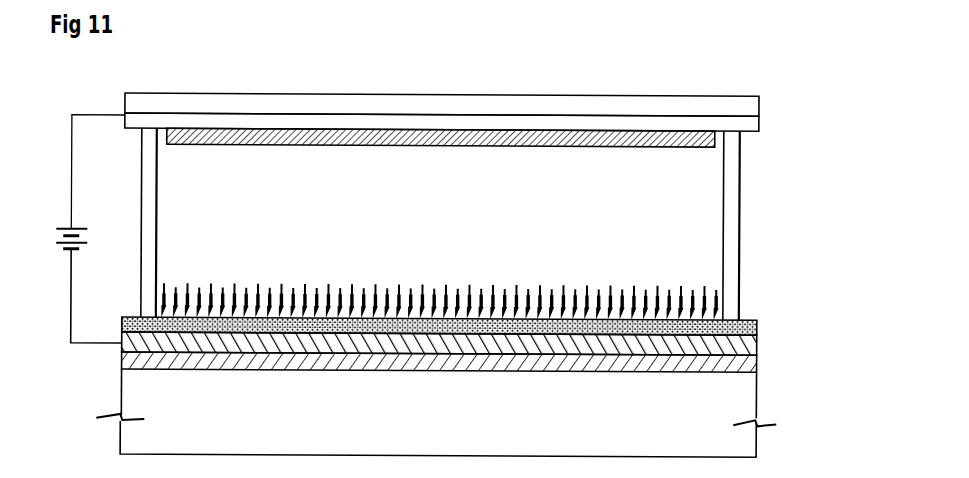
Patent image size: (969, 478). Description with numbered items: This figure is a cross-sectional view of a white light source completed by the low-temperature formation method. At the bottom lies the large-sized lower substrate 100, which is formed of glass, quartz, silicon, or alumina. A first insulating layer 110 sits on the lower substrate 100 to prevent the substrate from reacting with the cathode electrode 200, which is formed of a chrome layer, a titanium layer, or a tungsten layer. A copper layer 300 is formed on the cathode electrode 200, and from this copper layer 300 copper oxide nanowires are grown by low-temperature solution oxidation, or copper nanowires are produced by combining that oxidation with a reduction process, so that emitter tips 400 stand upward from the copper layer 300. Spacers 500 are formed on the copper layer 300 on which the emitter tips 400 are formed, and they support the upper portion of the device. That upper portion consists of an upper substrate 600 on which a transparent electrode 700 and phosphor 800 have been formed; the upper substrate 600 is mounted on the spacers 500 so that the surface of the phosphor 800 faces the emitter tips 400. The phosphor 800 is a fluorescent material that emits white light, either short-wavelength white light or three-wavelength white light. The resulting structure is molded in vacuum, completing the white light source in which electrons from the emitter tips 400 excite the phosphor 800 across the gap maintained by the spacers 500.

The lower substrate 100 is at (750, 394).
The first insulating layer 110 is at (759, 367).
The cathode electrode 200 is at (759, 345).
The copper layer 300 is at (759, 328).
The emitter tips 400 is at (568, 292).
The spacers 500 is at (741, 226).
The upper substrate 600 is at (760, 105).
The transparent electrode 700 is at (760, 122).
The phosphor 800 is at (700, 146).